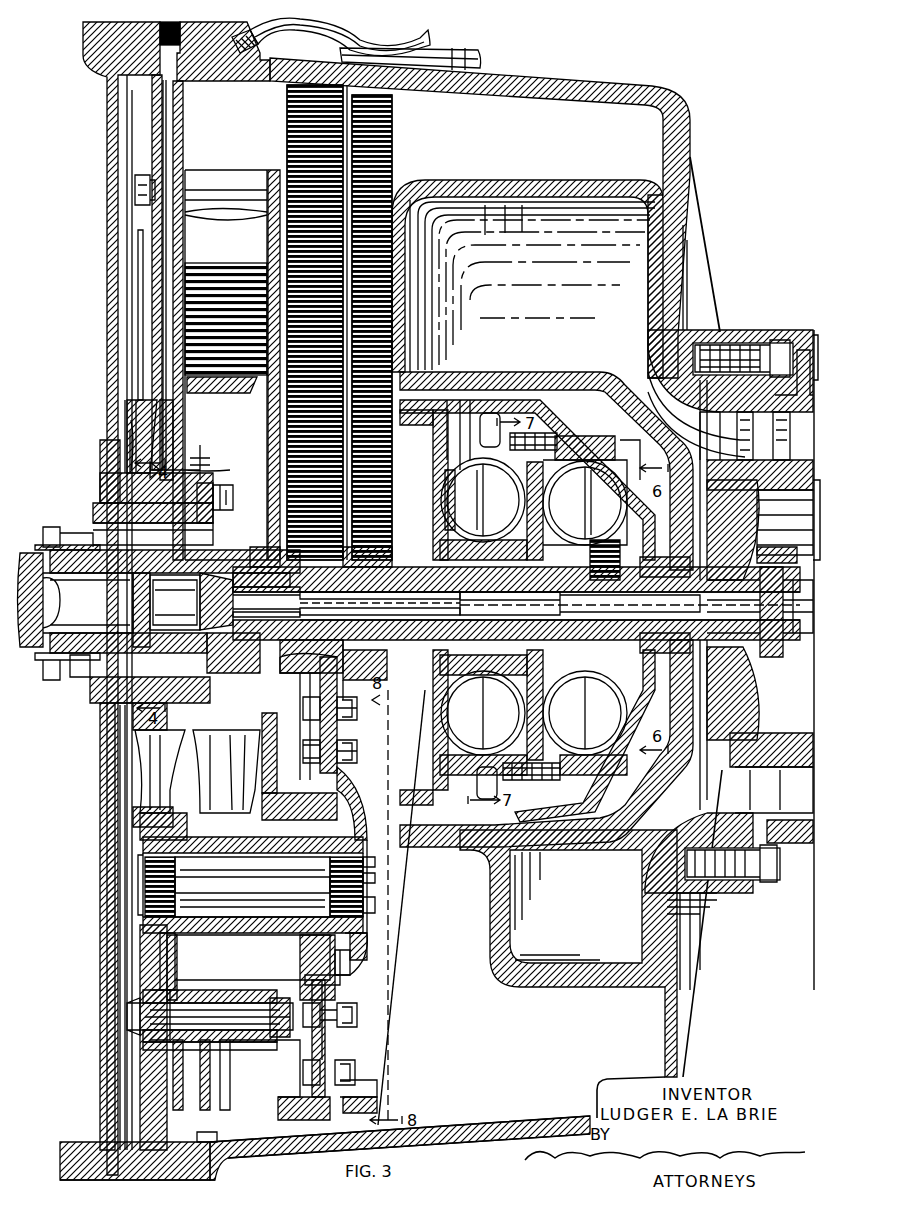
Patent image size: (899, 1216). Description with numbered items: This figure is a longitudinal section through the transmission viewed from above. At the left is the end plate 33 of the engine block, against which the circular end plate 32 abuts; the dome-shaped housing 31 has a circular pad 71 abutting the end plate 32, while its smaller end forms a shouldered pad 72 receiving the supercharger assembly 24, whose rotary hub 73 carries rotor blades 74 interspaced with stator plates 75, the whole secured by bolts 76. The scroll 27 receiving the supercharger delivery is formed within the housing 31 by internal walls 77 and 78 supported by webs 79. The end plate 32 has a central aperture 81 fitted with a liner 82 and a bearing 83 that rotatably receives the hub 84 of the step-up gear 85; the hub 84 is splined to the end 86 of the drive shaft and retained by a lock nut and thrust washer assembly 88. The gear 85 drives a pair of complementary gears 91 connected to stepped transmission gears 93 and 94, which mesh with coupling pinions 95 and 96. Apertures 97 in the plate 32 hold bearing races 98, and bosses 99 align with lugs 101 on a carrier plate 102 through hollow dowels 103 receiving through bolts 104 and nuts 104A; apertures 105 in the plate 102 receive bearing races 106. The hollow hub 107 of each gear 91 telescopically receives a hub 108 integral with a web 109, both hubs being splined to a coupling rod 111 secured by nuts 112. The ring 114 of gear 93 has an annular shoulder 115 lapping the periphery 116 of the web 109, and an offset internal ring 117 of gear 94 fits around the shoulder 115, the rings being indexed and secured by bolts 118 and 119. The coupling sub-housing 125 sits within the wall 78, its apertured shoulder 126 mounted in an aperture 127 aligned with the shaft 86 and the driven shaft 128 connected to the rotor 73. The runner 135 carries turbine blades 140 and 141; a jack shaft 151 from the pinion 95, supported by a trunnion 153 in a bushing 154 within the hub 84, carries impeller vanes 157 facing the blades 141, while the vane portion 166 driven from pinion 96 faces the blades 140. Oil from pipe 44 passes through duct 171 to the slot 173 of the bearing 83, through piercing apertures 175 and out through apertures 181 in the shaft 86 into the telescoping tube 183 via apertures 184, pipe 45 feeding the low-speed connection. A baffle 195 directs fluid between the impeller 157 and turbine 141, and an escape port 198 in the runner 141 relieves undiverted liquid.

The supercharger rotor and stator assembly 24 is at (801, 354).
The scroll 27 is at (567, 300).
The housing 31 is at (470, 1135).
The end plate 32 is at (165, 1180).
The end plate of the engine block 33 is at (103, 1007).
The oil supply pipe 44 is at (428, 35).
The oil supply pipe 45 is at (479, 54).
The circular pad 71 is at (221, 1146).
The shouldered pad 72 is at (735, 334).
The rotary hub 73 is at (770, 501).
The rotor blades 74 is at (737, 430).
The stator plates 75 is at (780, 423).
The bolts 76 is at (777, 345).
The internally formed wall 77 is at (525, 182).
The internally formed wall 78 is at (581, 372).
The webs 79 is at (547, 141).
The central aperture 81 is at (112, 708).
The liner 82 is at (92, 512).
The bearing 83 is at (81, 535).
The hub 84 is at (92, 678).
The main driving gear 85 is at (218, 451).
The drive shaft 86 is at (111, 628).
The lock nut and end thrust washer assembly 88 is at (55, 530).
The complementary gears 91 is at (244, 272).
The stepped transmission gear 93 is at (287, 110).
The stepped transmission gear 94 is at (394, 108).
The coupling pinion 95 is at (332, 595).
The coupling pinion 96 is at (356, 712).
The apertures 97 is at (163, 820).
The bearing race 98 is at (138, 270).
The bosses 99 is at (196, 170).
The lugs 101 is at (242, 180).
The carrier plate 102 is at (279, 170).
The hollow dowels 103 is at (233, 1040).
The through bolts 104 is at (265, 1049).
The securing nuts 104A is at (135, 192).
The apertures 105 is at (298, 800).
The bearing races 106 is at (340, 961).
The hub 107 is at (263, 833).
The hollow hub 108 is at (302, 922).
The web 109 is at (362, 941).
The coupling rod 111 is at (247, 888).
The nuts 112 is at (375, 867).
The ring 114 is at (320, 694).
The annular shoulder 115 is at (313, 742).
The periphery 116 is at (340, 765).
The offset internal ring 117 is at (352, 720).
The bolts 118 is at (376, 1000).
The bolts 119 is at (376, 1050).
The sub-housing 125 is at (511, 358).
The apertured shoulder 126 is at (693, 662).
The aperture 127 is at (686, 560).
The driven shaft 128 is at (742, 599).
The runner element 135 is at (473, 474).
The turbine blades 140 is at (476, 508).
The turbine blades 141 is at (615, 510).
The jack shaft 151 is at (543, 610).
The trunnion 153 is at (284, 596).
The bushing 154 is at (240, 616).
The impeller vanes 157 is at (575, 528).
The vane portion 166 is at (515, 527).
The cored radial duct 171 is at (150, 126).
The slot 173 is at (124, 465).
The piercing apertures 175 is at (115, 500).
The apertures 181 is at (200, 597).
The telescoping tube 183 is at (387, 622).
The aligned apertures 184 is at (195, 615).
The baffle 195 is at (604, 696).
The escape port 198 is at (616, 529).